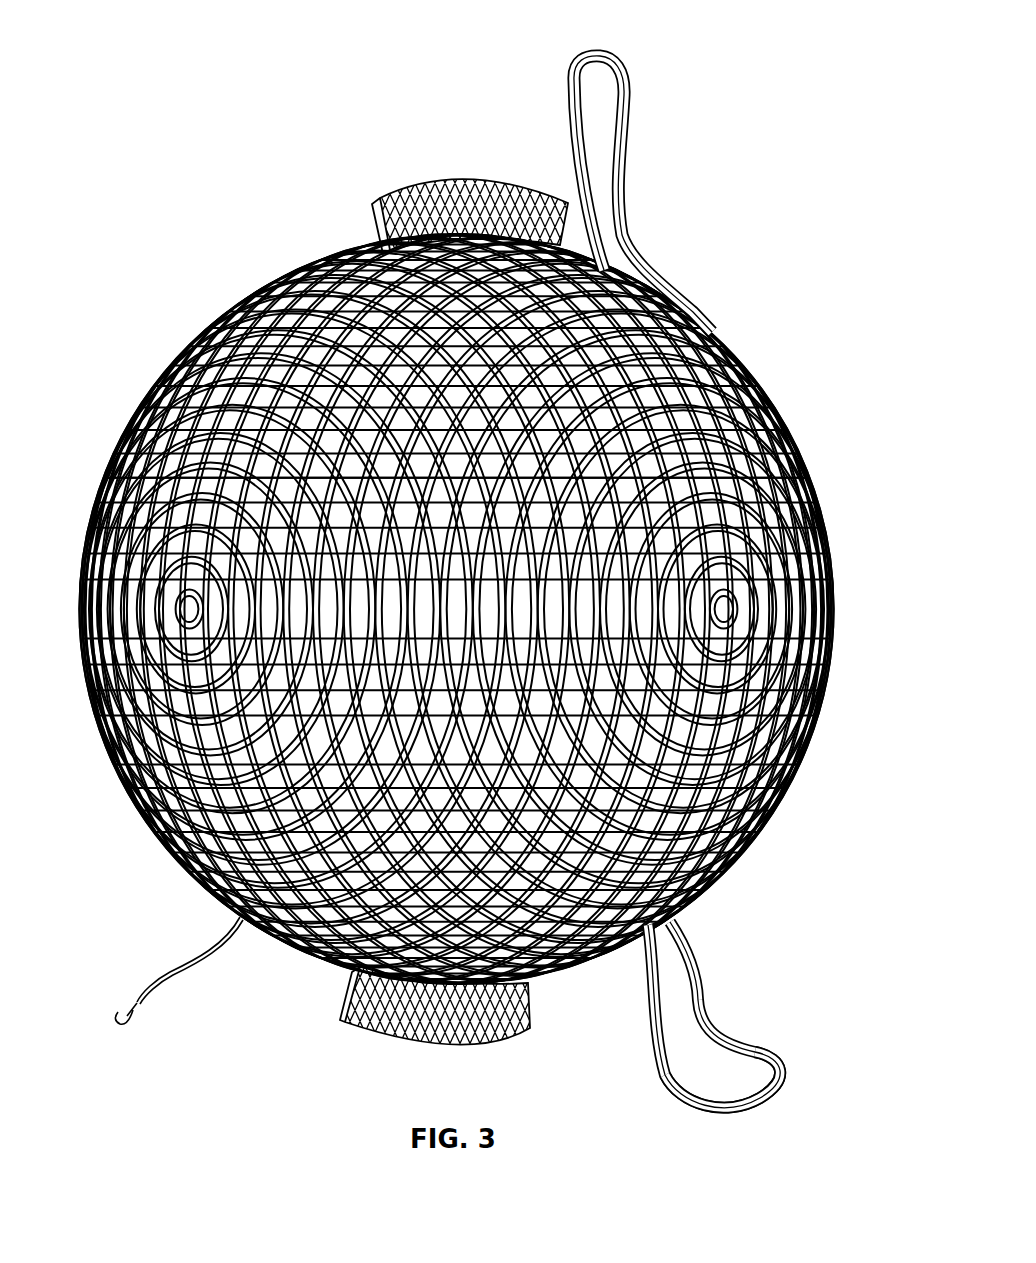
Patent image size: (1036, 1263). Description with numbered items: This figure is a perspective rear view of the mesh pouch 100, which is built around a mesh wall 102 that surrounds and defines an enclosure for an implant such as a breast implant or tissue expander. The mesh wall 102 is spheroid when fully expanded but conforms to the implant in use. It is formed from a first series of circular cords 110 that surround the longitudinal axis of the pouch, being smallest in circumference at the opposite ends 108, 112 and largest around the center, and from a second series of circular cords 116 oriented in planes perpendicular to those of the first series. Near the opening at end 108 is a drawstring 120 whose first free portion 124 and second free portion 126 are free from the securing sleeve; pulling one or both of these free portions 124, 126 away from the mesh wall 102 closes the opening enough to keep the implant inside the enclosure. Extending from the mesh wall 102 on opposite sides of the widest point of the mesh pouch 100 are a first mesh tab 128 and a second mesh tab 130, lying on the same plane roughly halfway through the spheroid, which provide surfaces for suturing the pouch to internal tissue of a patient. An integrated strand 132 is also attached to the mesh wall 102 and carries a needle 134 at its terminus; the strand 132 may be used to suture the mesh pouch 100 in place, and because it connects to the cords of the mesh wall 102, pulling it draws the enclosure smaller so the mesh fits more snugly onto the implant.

The mesh pouch 100 is at (146, 311).
The mesh wall 102 is at (268, 290).
The end 108 is at (845, 572).
The first series of circular cords 110 is at (750, 482).
The end 112 is at (70, 664).
The second series of circular cords 116 is at (722, 487).
The drawstring 120 is at (708, 975).
The first free portion 124 is at (613, 57).
The second free portion 126 is at (777, 1086).
The first mesh tab 128 is at (513, 1040).
The second mesh tab 130 is at (455, 166).
The integrated strand 132 is at (212, 956).
The needle 134 is at (137, 1014).